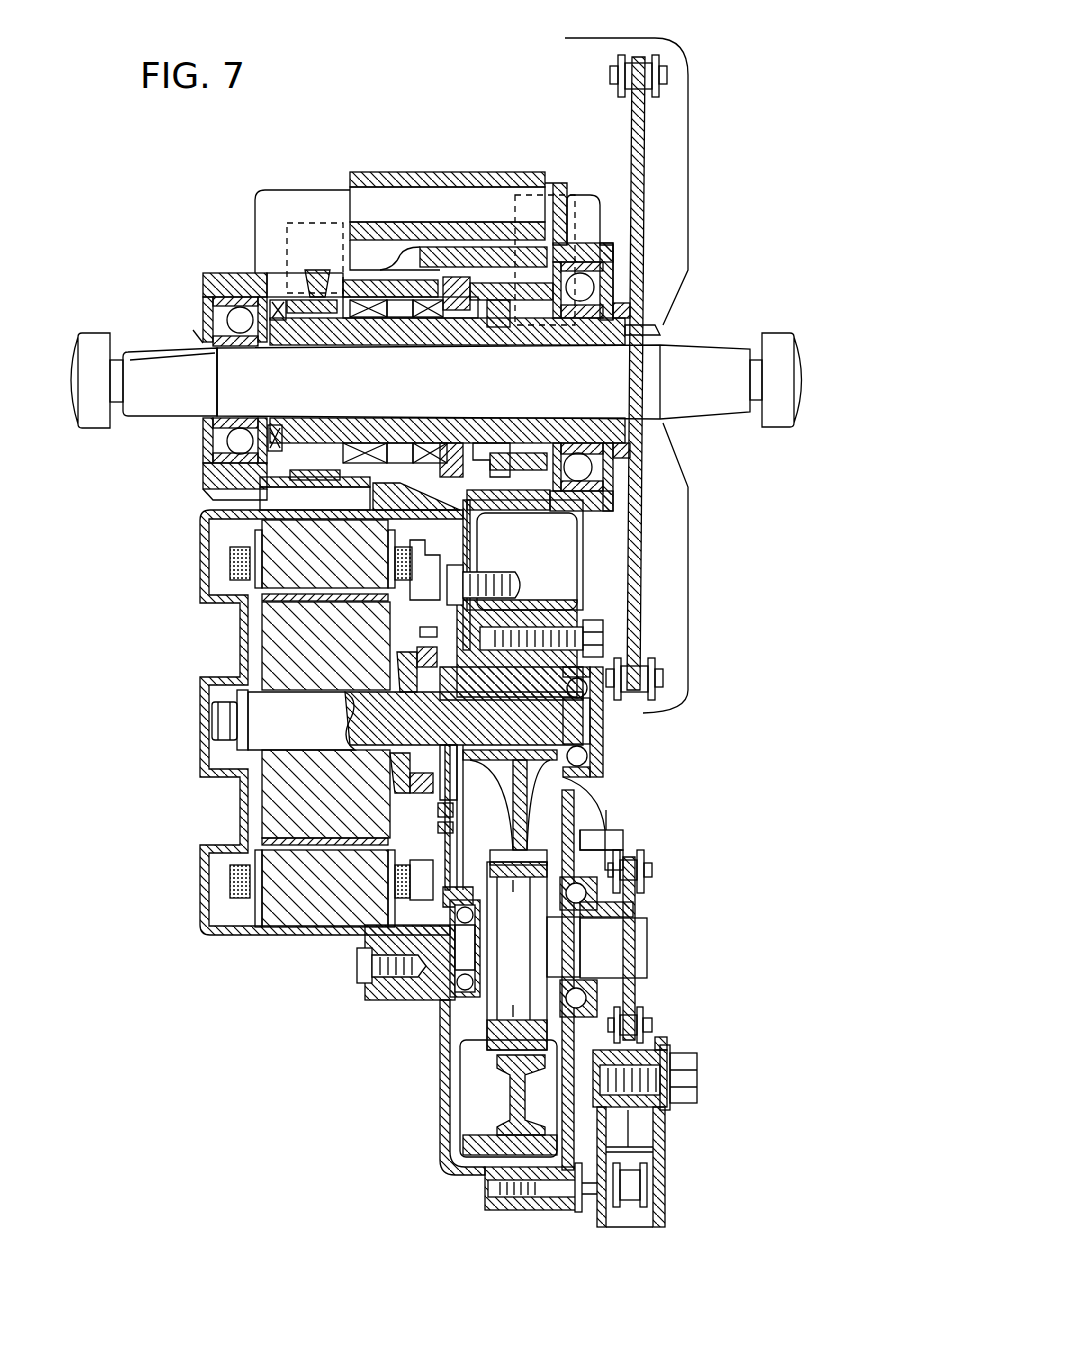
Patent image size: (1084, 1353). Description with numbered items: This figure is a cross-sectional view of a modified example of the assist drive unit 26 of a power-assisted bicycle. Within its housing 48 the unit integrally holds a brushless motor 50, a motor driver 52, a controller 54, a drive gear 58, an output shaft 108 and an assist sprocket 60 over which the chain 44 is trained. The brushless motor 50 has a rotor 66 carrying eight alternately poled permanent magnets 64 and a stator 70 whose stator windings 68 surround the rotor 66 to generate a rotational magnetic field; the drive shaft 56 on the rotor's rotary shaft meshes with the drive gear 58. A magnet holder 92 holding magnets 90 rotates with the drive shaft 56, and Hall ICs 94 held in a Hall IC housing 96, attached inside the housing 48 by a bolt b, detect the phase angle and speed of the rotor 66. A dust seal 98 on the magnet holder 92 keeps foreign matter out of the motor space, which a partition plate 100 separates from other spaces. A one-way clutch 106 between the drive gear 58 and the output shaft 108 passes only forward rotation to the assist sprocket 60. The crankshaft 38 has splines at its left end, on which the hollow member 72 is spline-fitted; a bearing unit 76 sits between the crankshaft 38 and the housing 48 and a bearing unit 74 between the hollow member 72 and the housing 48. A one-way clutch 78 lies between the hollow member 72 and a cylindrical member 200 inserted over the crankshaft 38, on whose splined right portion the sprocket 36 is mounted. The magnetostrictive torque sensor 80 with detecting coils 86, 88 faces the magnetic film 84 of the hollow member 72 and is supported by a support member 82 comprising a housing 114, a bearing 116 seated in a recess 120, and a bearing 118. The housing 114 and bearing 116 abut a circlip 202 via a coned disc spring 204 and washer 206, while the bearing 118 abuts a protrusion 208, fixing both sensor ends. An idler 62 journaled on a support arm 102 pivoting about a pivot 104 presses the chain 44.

The assist drive unit 26 is at (350, 985).
The sprocket 36 is at (645, 153).
The crankshaft 38 is at (713, 358).
The chain 44 is at (660, 77).
The housing 48 is at (255, 195).
The brushless motor 50 is at (226, 746).
The motor driver 52 is at (313, 206).
The controller 54 is at (533, 196).
The drive shaft 56 is at (602, 725).
The drive gear 58 is at (575, 800).
The assist sprocket 60 is at (640, 880).
The idler 62 is at (638, 1215).
The permanent magnets 64 is at (280, 603).
The rotor 66 is at (295, 650).
The stator windings 68 is at (230, 880).
The stator 70 is at (308, 905).
The hollow member 72 is at (560, 292).
The bearing unit 74 is at (587, 280).
The bearing unit 76 is at (228, 322).
The one-way clutch 78 is at (540, 328).
The magnetostrictive torque sensor 80 is at (372, 298).
The support member 82 is at (318, 262).
The magnetic film 84 is at (395, 330).
The detecting coil 86 is at (368, 325).
The detecting coil 88 is at (422, 328).
The magnet 90 is at (352, 650).
The magnet holder 92 is at (428, 800).
The Hall IC 94 is at (428, 628).
The Hall IC housing 96 is at (425, 548).
The dust seal 98 is at (490, 775).
The partition plate 100 is at (510, 520).
The support arm 102 is at (642, 1150).
The pivot 104 is at (637, 1107).
The one-way clutch 106 is at (525, 905).
The output shaft 108 is at (637, 940).
The housing 114 is at (400, 296).
The bearing 116 is at (290, 330).
The bearing 118 is at (418, 265).
The recess 120 is at (300, 296).
The cylindrical member 200 is at (655, 333).
The circlip 202 is at (272, 445).
The coned disc spring 204 is at (290, 458).
The washer 206 is at (300, 490).
The protrusion 208 is at (492, 300).
The bolt b is at (462, 585).